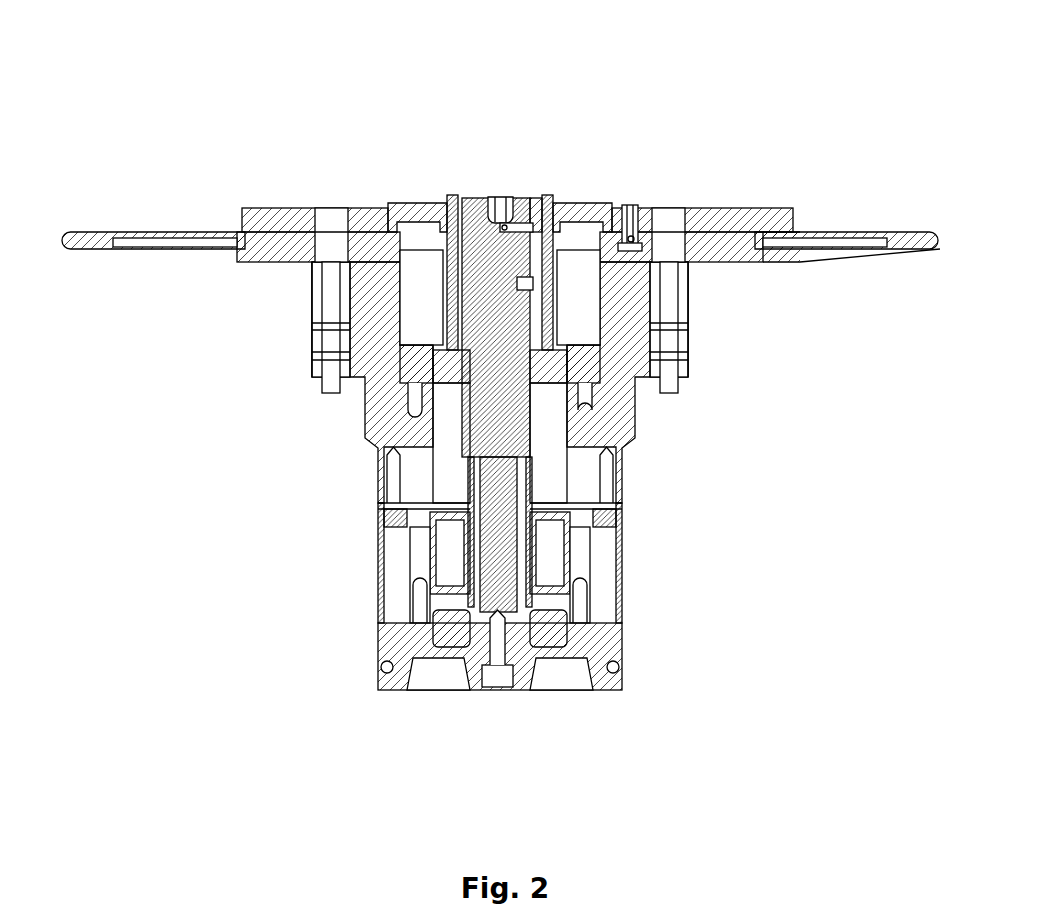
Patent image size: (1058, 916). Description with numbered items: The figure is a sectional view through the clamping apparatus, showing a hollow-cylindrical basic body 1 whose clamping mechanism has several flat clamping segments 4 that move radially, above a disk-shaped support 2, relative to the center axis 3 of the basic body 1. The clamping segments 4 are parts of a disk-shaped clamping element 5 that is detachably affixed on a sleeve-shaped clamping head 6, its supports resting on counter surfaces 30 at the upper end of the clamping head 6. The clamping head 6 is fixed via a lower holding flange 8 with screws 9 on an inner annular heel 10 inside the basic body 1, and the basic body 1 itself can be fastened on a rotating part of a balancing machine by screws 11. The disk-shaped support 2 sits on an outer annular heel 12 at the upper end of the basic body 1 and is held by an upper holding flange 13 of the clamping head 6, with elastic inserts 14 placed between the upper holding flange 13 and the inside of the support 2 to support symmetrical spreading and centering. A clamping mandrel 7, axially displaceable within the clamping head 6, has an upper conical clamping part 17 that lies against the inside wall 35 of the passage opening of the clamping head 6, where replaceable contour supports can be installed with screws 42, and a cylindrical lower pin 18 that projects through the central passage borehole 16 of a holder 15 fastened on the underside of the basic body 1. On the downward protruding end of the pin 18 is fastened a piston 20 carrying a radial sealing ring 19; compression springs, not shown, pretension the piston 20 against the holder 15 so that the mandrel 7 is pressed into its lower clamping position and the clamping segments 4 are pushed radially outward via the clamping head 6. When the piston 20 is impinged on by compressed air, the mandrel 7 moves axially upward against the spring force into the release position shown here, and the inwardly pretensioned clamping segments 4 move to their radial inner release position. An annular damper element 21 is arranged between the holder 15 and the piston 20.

The basic body 1 is at (395, 428).
The disk-shaped support 2 is at (185, 230).
The center axis 3 is at (515, 197).
The clamping segments 4 is at (280, 222).
The disk-shaped clamping element 5 is at (591, 173).
The clamping head 6 is at (437, 268).
The clamping mandrel 7 is at (540, 438).
The lower holding flange 8 is at (430, 362).
The screws 9 is at (598, 342).
The inner annular heel 10 is at (572, 373).
The screws 11 is at (333, 375).
The outer annular heel 12 is at (636, 238).
The upper holding flange 13 is at (625, 215).
The elastic inserts 14 is at (640, 245).
The holder 15 is at (577, 547).
The central passage borehole 16 is at (493, 530).
The conical clamping part 17 is at (475, 218).
The cylindrical lower pin 18 is at (490, 570).
The radial sealing ring 19 is at (372, 668).
The piston 20 is at (593, 633).
The annular damper element 21 is at (455, 633).
The counter surfaces 30 is at (432, 200).
The inside wall 35 is at (534, 284).
The screws 42 is at (543, 200).